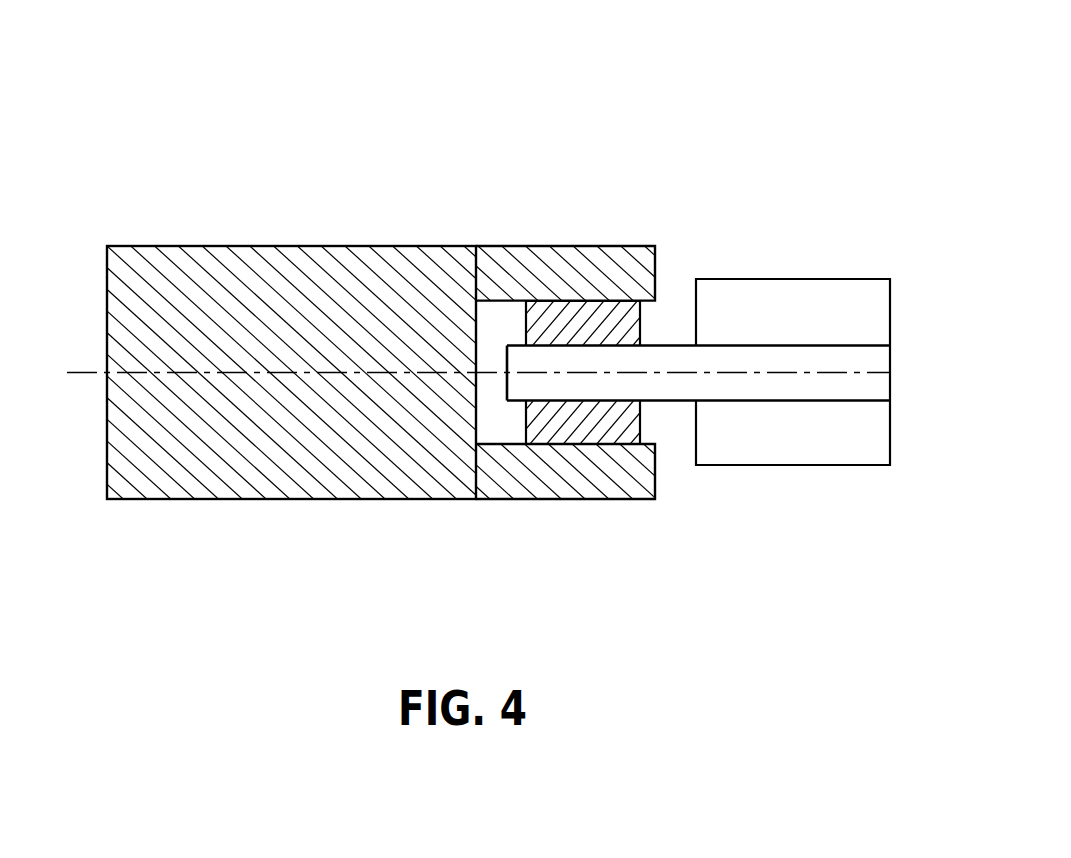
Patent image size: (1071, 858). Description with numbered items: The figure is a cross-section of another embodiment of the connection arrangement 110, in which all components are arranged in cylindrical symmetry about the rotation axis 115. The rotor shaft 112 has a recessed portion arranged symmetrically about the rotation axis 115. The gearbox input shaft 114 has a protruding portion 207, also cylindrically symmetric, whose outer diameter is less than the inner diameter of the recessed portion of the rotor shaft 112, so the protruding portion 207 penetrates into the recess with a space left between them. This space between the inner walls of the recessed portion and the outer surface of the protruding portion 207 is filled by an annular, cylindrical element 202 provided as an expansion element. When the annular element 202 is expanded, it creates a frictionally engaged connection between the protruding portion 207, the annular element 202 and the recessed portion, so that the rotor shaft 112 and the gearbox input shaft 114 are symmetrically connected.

The connection arrangement 110 is at (598, 44).
The rotor shaft 112 is at (250, 499).
The gearbox input shaft 114 is at (794, 465).
The rotation axis 115 is at (85, 372).
The annular element 202 is at (641, 323).
The protruding portion 207 is at (668, 400).